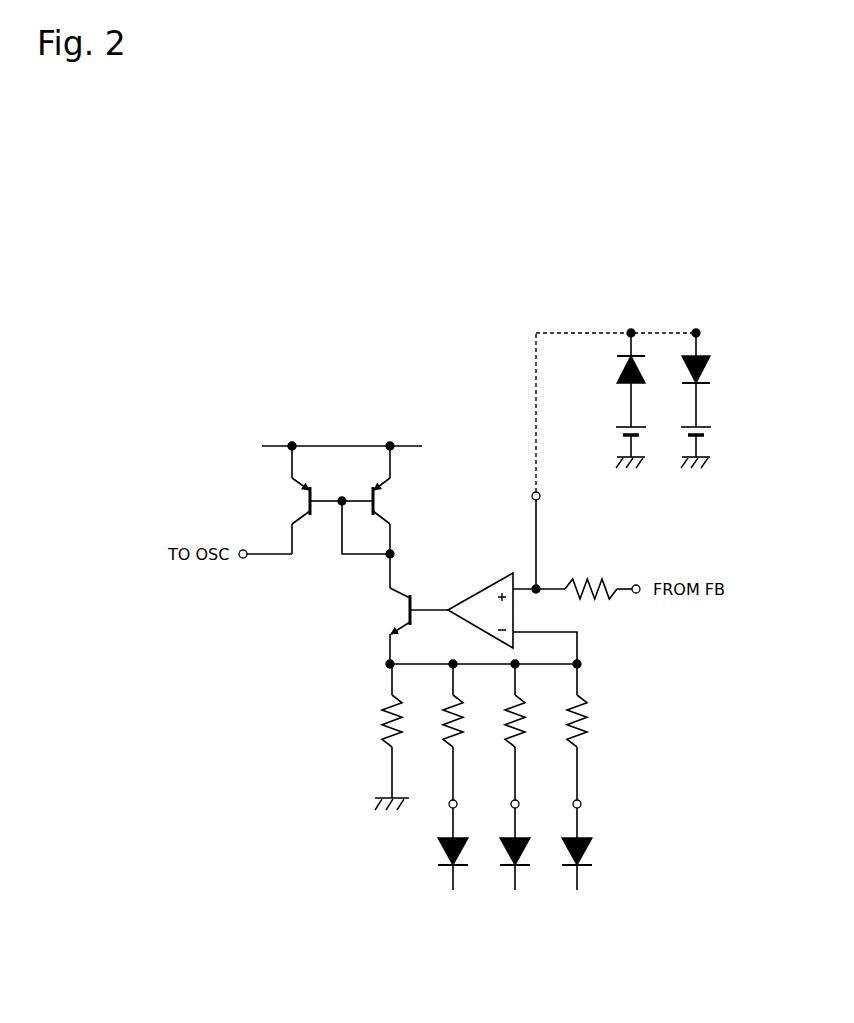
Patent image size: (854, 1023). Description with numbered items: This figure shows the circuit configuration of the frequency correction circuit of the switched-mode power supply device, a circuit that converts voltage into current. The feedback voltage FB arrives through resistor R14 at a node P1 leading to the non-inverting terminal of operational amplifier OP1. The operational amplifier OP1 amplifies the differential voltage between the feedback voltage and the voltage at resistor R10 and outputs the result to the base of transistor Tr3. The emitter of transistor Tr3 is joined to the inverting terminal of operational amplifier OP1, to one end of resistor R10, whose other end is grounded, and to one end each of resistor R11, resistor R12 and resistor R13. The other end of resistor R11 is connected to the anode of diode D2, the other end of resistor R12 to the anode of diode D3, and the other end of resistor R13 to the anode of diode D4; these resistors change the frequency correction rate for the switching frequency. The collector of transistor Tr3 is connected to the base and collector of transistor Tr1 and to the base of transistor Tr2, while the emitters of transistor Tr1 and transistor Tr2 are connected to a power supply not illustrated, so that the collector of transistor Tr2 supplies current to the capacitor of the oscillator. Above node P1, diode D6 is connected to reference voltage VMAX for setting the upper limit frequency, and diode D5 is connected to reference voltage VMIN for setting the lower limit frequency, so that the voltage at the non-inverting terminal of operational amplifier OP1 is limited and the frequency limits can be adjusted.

The transistor Tr1 is at (385, 500).
The transistor Tr2 is at (298, 500).
The transistor Tr3 is at (401, 609).
The operational amplifier OP1 is at (478, 590).
The terminal P1 is at (614, 461).
The resistor R14 is at (602, 576).
The resistor R10 is at (406, 737).
The resistor R13 is at (471, 736).
The resistor R12 is at (533, 736).
The resistor R11 is at (594, 736).
The diode D2 is at (586, 852).
The diode D3 is at (525, 852).
The diode D4 is at (463, 852).
The diode D5 is at (613, 380).
The diode D6 is at (713, 380).
The reference voltage VMIN is at (604, 443).
The reference voltage VMAX is at (718, 443).